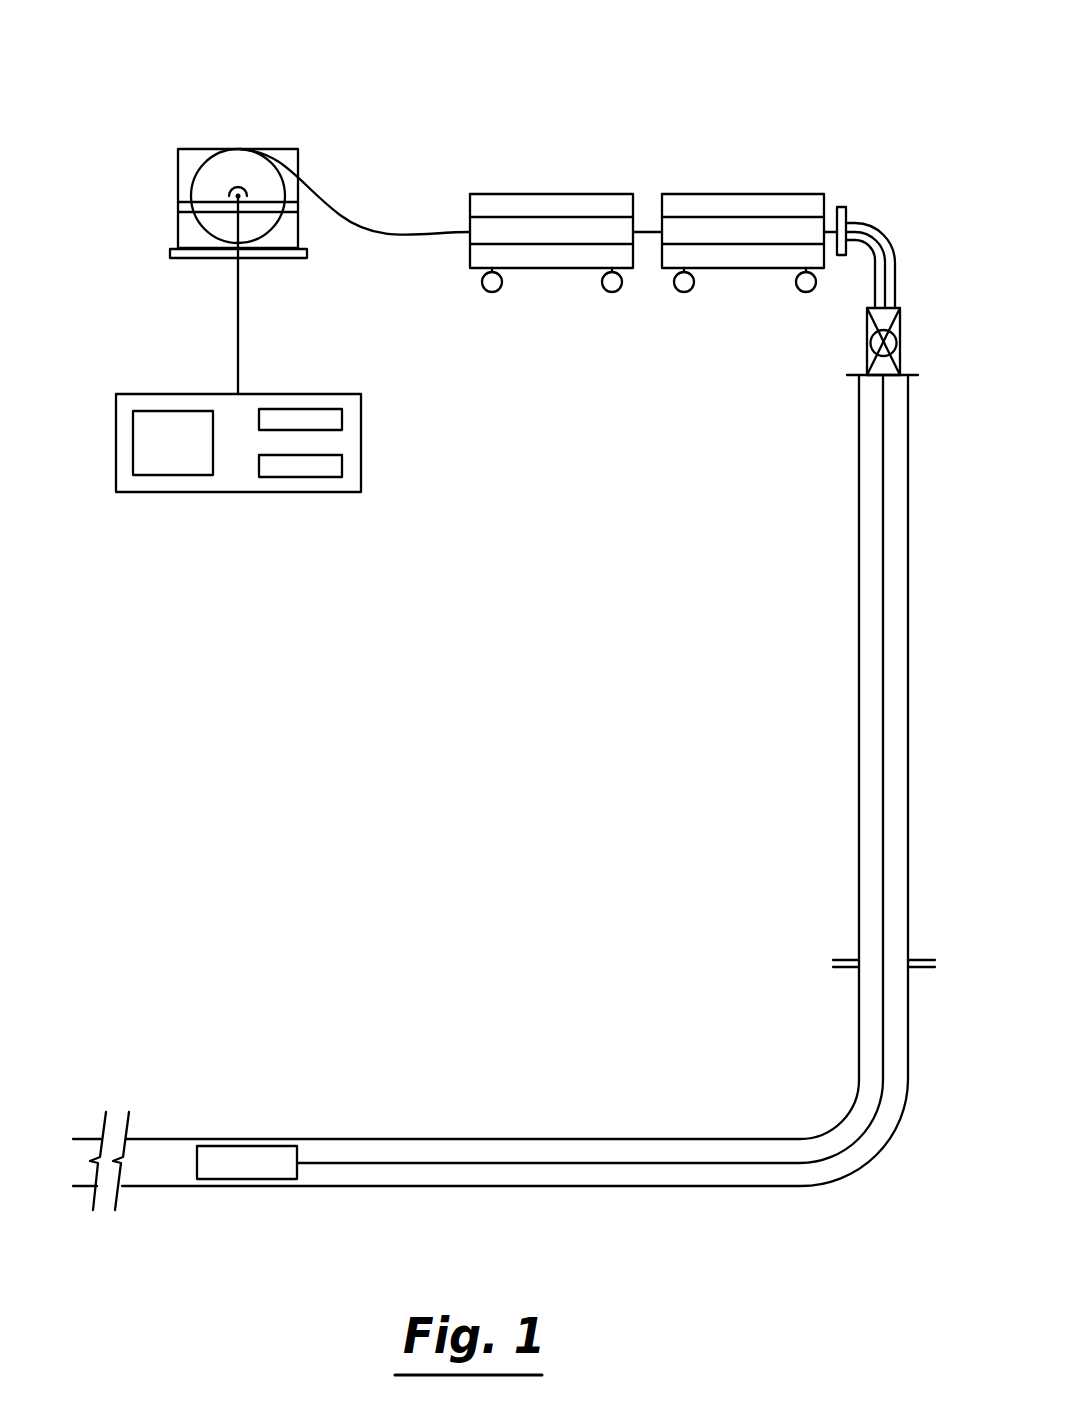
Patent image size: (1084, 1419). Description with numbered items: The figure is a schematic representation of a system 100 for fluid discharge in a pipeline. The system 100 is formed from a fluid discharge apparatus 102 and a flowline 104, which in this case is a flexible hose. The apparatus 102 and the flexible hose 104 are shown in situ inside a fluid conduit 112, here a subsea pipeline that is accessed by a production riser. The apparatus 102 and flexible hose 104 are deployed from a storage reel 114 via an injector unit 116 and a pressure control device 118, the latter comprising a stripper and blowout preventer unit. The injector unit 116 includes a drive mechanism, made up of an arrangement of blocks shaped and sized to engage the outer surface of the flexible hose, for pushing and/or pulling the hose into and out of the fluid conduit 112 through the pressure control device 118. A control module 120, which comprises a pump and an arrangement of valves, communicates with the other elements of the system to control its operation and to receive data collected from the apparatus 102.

The system 100 is at (668, 138).
The fluid discharge apparatus 102 is at (264, 1165).
The flowline 104 is at (697, 1162).
The fluid conduit 112 is at (467, 1139).
The storage reel 114 is at (267, 148).
The injector unit 116 is at (515, 193).
The pressure control device 118 is at (762, 193).
The control module 120 is at (295, 394).